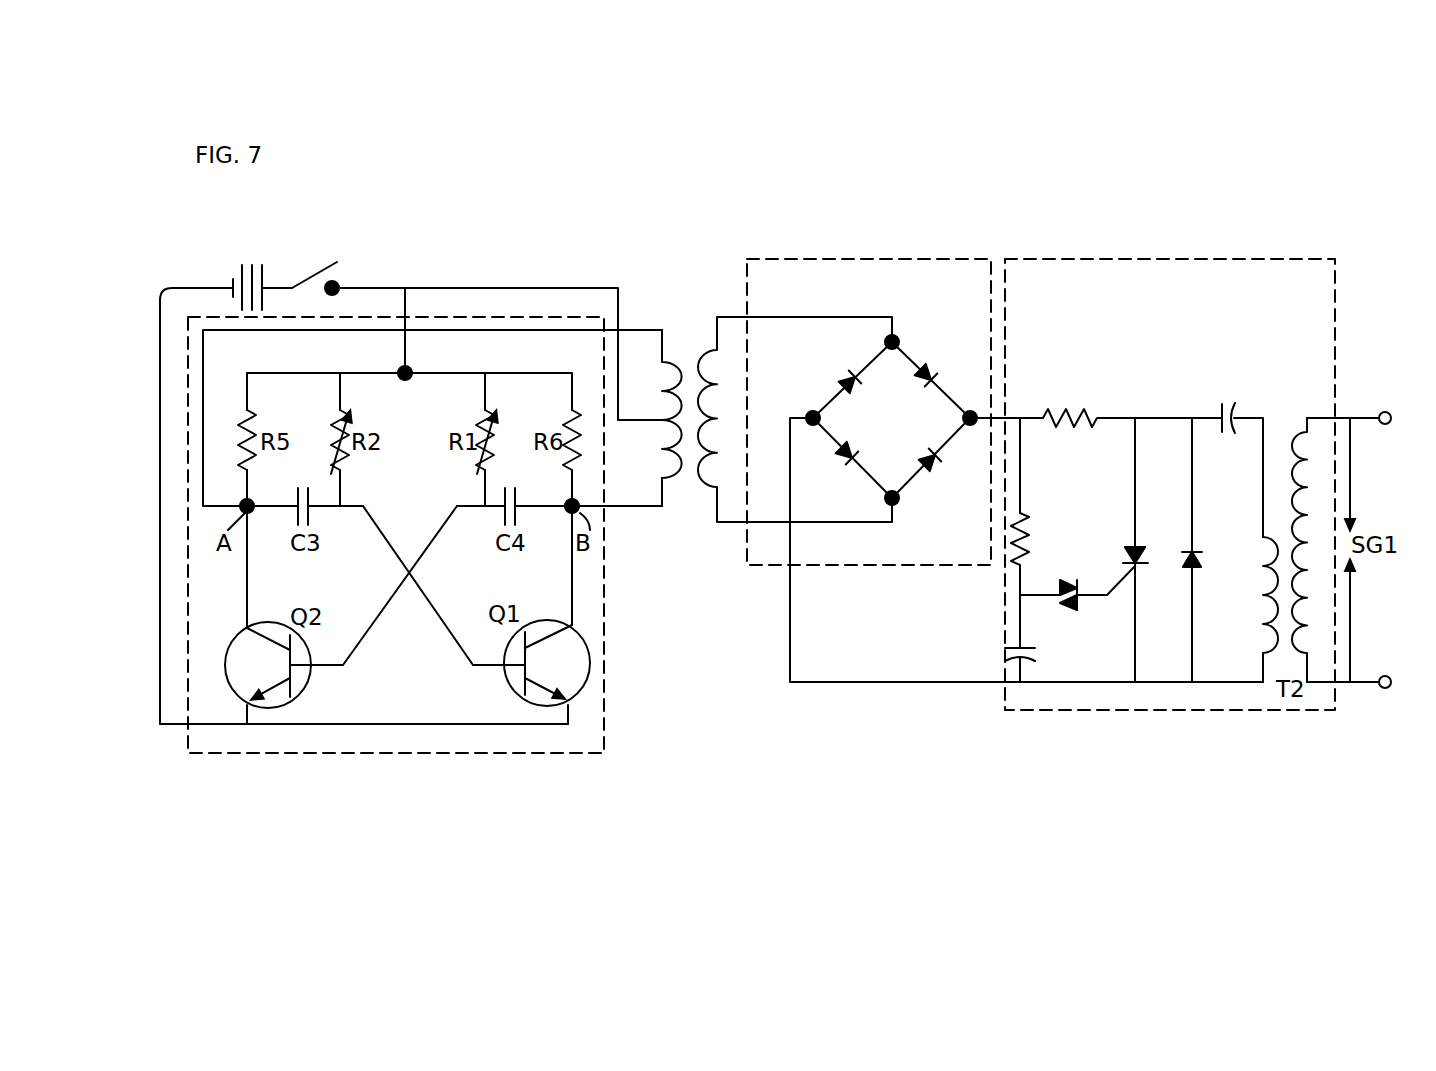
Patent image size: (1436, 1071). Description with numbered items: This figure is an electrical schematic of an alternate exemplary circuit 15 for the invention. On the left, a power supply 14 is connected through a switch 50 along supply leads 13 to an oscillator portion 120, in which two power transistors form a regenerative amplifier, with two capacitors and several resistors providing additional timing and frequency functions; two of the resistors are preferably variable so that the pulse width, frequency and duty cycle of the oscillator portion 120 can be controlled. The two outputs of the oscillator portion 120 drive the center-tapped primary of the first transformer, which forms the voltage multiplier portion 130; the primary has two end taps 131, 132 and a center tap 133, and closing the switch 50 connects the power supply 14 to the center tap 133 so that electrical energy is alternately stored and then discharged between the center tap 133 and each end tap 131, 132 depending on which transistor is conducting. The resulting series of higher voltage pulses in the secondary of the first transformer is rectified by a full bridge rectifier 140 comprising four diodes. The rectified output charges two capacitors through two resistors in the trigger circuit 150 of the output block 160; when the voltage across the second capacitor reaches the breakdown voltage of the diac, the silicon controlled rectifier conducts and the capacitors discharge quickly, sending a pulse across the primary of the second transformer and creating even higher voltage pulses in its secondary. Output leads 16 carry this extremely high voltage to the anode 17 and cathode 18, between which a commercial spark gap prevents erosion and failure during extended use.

The power supply leads 13 is at (160, 285).
The power supply 14 is at (262, 274).
The switch 50 is at (319, 266).
The oscillator portion 120 is at (518, 317).
The ignition circuit 15 is at (661, 222).
The voltage multiplier portion 130 is at (732, 419).
The end tap 131 is at (661, 508).
The end tap 132 is at (662, 328).
The center tap 133 is at (663, 421).
The rectifier 140 is at (882, 259).
The trigger circuit 150 is at (1153, 710).
The output circuit 160 is at (1188, 259).
The output leads 16 is at (1358, 417).
The anode 17 is at (1390, 411).
The cathode 18 is at (1392, 684).